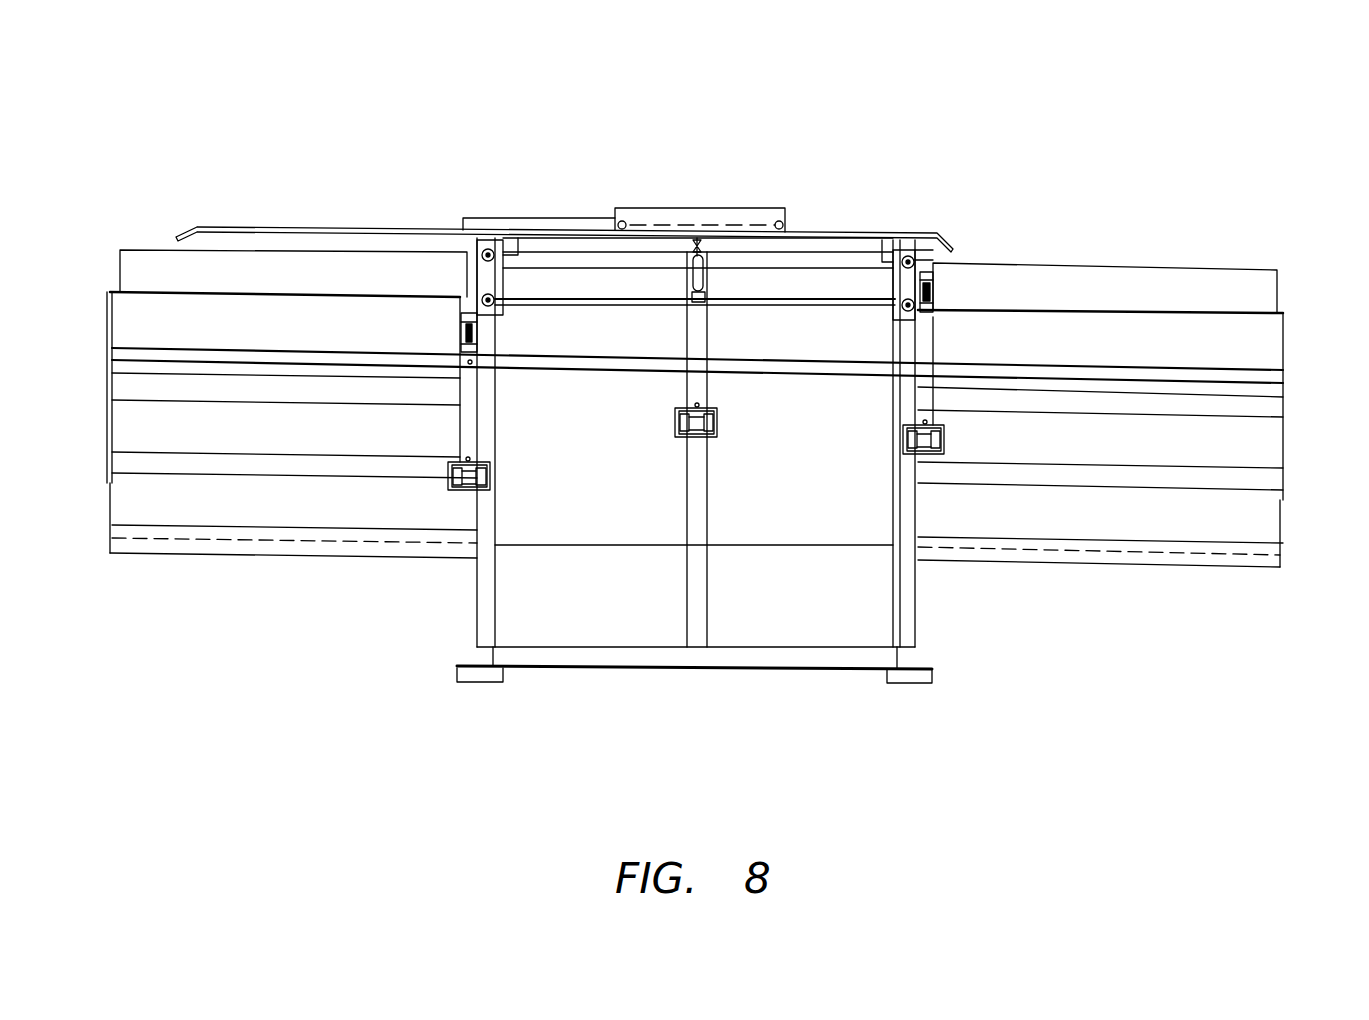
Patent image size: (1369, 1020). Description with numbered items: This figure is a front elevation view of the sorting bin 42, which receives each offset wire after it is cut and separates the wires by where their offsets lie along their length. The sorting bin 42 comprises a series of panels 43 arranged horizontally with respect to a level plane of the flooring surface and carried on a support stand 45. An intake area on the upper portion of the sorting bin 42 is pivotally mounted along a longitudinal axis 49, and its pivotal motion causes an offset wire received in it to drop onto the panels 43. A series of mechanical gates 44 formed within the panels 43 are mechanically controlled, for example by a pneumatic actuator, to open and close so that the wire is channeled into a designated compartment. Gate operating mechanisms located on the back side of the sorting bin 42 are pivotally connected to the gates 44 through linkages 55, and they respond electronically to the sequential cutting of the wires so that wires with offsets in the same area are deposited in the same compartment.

The sorting bin 42 is at (736, 388).
The panels 43 is at (1287, 347).
The mechanical gates 44 is at (828, 247).
The support stand 45 is at (718, 674).
The longitudinal axis 49 is at (698, 247).
The linkages 55 is at (693, 243).